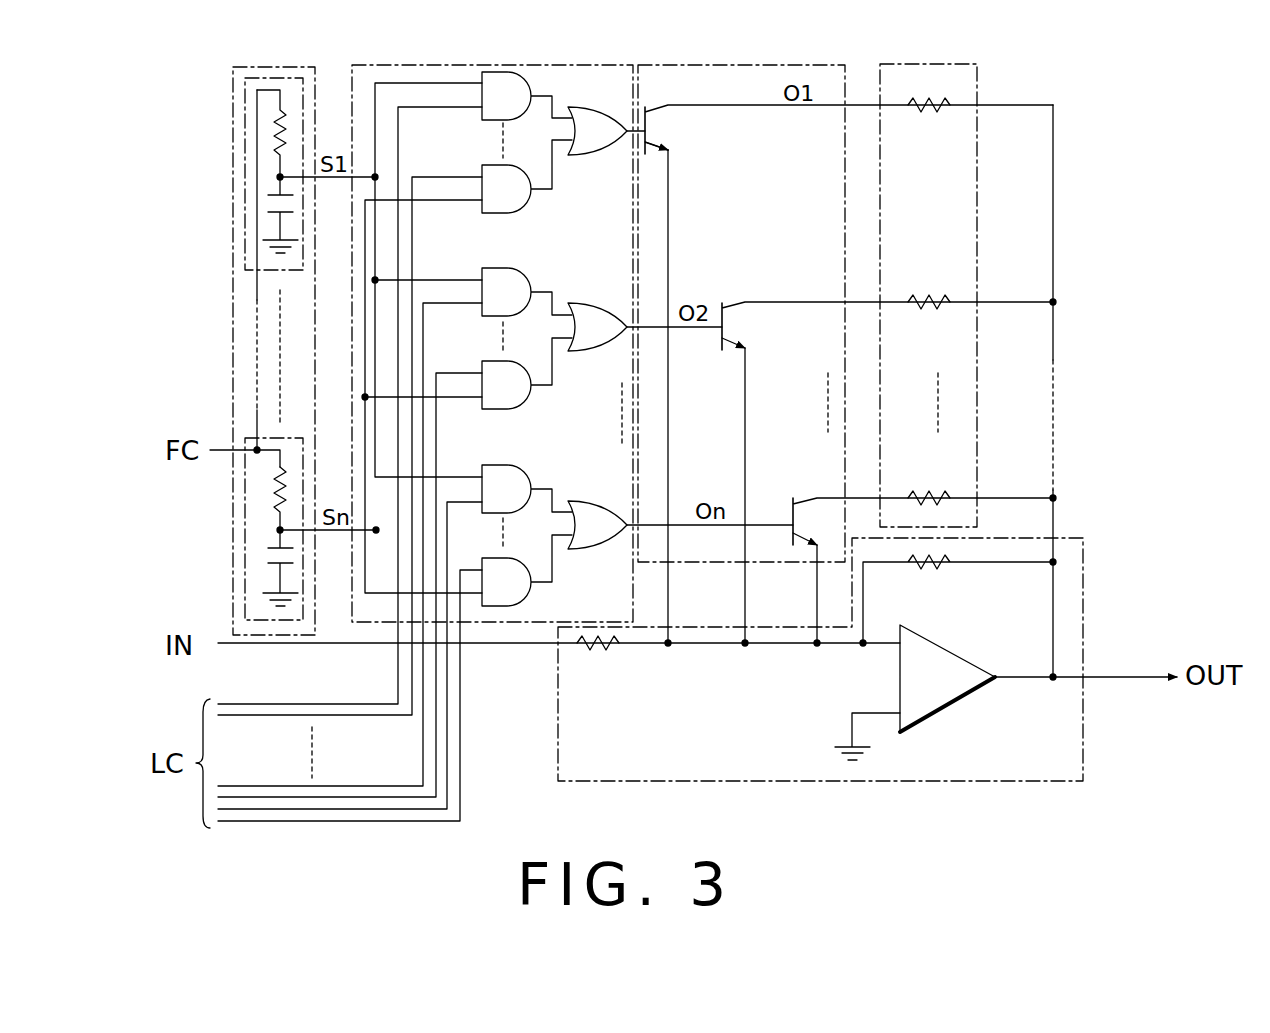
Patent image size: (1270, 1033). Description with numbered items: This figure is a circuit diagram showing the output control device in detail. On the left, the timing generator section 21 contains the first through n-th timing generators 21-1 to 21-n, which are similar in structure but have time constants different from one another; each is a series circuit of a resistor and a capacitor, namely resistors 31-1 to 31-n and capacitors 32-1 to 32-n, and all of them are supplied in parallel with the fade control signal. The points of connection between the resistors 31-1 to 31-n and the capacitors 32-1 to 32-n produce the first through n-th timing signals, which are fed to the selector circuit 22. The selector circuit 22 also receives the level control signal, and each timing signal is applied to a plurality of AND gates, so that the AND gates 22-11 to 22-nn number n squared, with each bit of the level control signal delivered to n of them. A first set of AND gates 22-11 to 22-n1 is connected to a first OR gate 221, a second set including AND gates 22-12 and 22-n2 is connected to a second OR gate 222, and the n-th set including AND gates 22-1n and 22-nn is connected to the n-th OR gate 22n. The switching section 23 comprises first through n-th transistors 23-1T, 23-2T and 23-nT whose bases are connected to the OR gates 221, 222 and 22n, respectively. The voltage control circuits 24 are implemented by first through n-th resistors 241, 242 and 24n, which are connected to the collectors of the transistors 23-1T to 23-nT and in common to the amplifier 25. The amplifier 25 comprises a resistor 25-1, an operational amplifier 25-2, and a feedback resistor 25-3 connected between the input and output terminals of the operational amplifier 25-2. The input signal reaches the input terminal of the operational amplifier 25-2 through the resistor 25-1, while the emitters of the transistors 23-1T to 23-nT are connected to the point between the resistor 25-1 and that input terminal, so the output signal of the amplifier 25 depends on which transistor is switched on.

The timing generator section 21 is at (275, 63).
The first timing generator 21-1 is at (245, 103).
The n-th timing generator 21-n is at (275, 435).
The resistor 31-1 is at (276, 133).
The resistor 31-n is at (267, 488).
The capacitor 32-1 is at (270, 205).
The capacitor 32-n is at (268, 557).
The selector circuit 22 is at (400, 65).
The AND gate 22-11 is at (510, 70).
The AND gate 22-n1 is at (535, 205).
The AND gate 22-12 is at (530, 270).
The AND gate 22-n2 is at (518, 408).
The AND gate 22-1n is at (495, 467).
The AND gate 22-nn is at (530, 595).
The first OR gate 221 is at (595, 108).
The second OR gate 222 is at (600, 302).
The n-th OR gate 22n is at (590, 498).
The switching section 23 is at (790, 65).
The first transistor 23-1T is at (849, 355).
The second transistor 23-2T is at (725, 296).
The n-th transistor 23-nT is at (803, 492).
The voltage control circuits 24 is at (977, 93).
The first resistor 241 is at (934, 134).
The second resistor 242 is at (934, 329).
The n-th resistor 24n is at (935, 490).
The amplifier 25 is at (1087, 656).
The resistor 25-1 is at (602, 665).
The operational amplifier 25-2 is at (950, 660).
The feedback resistor 25-3 is at (935, 570).